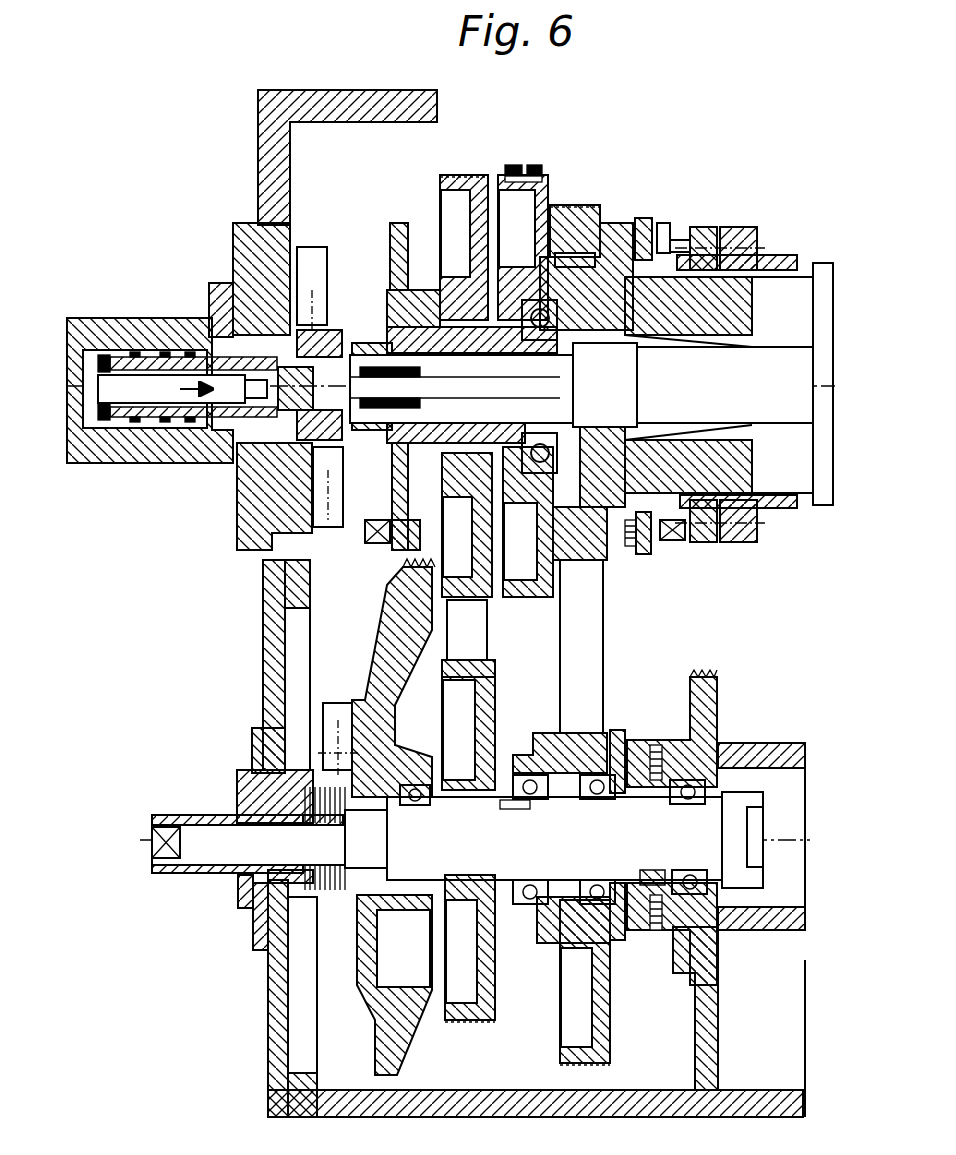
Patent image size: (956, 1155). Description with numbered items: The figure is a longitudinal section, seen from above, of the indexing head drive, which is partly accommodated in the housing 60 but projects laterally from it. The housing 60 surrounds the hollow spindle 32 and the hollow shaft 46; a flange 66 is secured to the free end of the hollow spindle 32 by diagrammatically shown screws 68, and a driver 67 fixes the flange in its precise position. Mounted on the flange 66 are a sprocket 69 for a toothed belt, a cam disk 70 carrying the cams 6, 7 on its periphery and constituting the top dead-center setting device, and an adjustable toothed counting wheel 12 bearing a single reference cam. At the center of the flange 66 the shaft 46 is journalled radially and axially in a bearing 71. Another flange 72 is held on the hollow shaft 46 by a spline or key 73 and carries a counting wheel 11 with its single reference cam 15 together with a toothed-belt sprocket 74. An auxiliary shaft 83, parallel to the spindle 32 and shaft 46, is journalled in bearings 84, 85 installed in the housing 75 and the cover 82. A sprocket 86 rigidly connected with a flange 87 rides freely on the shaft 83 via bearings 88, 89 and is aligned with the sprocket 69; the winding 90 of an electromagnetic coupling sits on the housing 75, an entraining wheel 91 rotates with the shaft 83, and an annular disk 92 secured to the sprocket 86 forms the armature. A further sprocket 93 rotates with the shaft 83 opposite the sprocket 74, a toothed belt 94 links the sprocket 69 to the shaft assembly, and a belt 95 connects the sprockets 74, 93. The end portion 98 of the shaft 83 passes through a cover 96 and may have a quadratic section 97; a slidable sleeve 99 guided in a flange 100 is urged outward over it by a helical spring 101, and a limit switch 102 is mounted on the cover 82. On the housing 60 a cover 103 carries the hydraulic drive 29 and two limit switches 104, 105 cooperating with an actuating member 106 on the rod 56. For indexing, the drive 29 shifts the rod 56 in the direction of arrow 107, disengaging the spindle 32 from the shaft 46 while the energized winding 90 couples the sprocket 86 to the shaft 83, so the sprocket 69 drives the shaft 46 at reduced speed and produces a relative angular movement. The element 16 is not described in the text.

The cam 6 is at (532, 166).
The cam 7 is at (510, 168).
The counting wheel 11 is at (385, 340).
The adjustable toothed counting wheel 12 is at (665, 245).
The reference cam 15 is at (378, 548).
The bolt 16 is at (678, 538).
The hydraulic drive 29 is at (130, 437).
The hollow spindle 32 is at (698, 272).
The hollow shaft 46 is at (468, 432).
The rod 56 is at (380, 395).
The housing 60 is at (280, 118).
The flange 66 is at (617, 240).
The driver 67 is at (703, 384).
The screws 68 is at (688, 245).
The sprocket 69 is at (578, 222).
The cam disk 70 is at (542, 195).
The bearing 71 is at (537, 472).
The flange 72 is at (400, 290).
The spline or key 73 is at (450, 348).
The toothed-belt sprocket 74 is at (455, 182).
The housing 75 is at (710, 1025).
The cover 82 is at (392, 1005).
The auxiliary shaft 83 is at (748, 828).
The bearing 84 is at (425, 920).
The bearing 85 is at (715, 905).
The sprocket 86 is at (600, 1045).
The flange 87 is at (542, 740).
The bearing 88 is at (527, 905).
The bearing 89 is at (608, 915).
The winding 90 is at (660, 928).
The entraining wheel 91 is at (650, 730).
The annular disk 92 is at (617, 740).
The sprocket 93 is at (487, 1005).
The toothed timing belt 94 is at (598, 594).
The toothed belt 95 is at (480, 636).
The cover 96 is at (275, 1020).
The quadratic cross-section portion 97 is at (150, 865).
The end portion 98 is at (200, 853).
The slidable sleeve 99 is at (235, 873).
The flange 100 is at (250, 910).
The helical spring 101 is at (333, 898).
The limit switch 102 is at (333, 722).
The cover 103 is at (248, 243).
The limit switch 104 is at (312, 260).
The limit switch 105 is at (327, 512).
The actuating member 106 is at (335, 330).
The arrow 107 is at (178, 318).